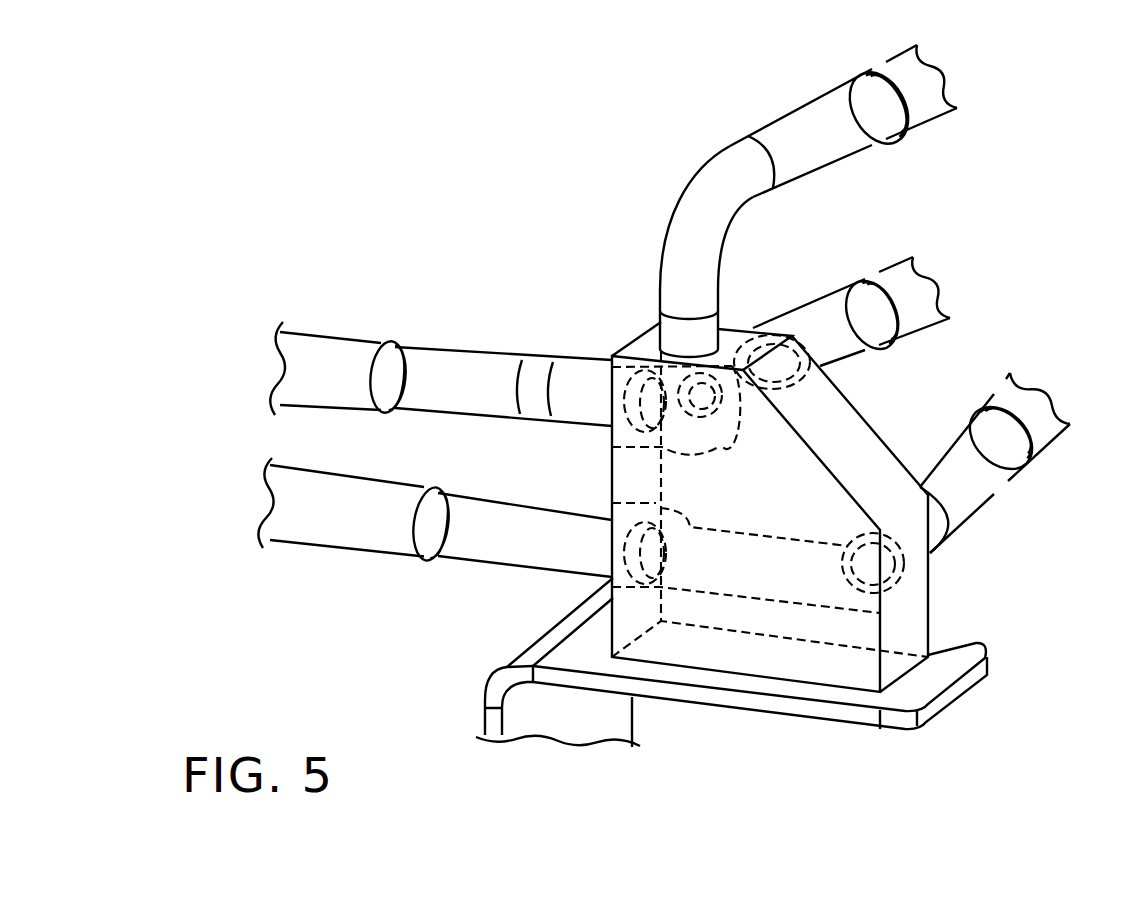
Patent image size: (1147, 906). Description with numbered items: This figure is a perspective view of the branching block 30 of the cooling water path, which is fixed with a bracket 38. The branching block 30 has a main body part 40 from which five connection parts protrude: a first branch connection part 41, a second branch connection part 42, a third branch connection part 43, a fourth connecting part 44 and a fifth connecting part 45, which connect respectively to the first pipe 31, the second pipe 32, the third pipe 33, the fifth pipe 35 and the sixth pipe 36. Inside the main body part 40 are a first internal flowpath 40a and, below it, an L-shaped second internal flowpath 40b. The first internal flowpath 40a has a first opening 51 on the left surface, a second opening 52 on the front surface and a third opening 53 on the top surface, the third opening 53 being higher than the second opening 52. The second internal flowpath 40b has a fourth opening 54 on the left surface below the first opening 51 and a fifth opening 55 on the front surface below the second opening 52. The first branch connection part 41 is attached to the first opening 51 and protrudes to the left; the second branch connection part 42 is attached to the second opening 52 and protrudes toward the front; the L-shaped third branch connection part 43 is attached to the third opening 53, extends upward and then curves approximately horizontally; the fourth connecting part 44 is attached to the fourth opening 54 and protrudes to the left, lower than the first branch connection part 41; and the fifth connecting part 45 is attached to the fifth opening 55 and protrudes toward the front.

The branching block 30 is at (605, 297).
The first pipe 31 is at (312, 330).
The second pipe 32 is at (915, 262).
The third pipe 33 is at (868, 78).
The fifth pipe 35 is at (327, 550).
The sixth pipe 36 is at (1060, 423).
The bracket 38 is at (981, 652).
The main body part 40 is at (864, 419).
The first internal flowpath 40a is at (624, 448).
The second internal flowpath 40b is at (626, 505).
The first branch connection part 41 is at (468, 345).
The second branch connection part 42 is at (826, 306).
The third branch connection part 43 is at (728, 162).
The fourth connecting part 44 is at (480, 550).
The fifth connecting part 45 is at (990, 500).
The first opening 51 is at (616, 384).
The second opening 52 is at (812, 375).
The third opening 53 is at (733, 318).
The fourth opening 54 is at (618, 569).
The fifth opening 55 is at (916, 558).